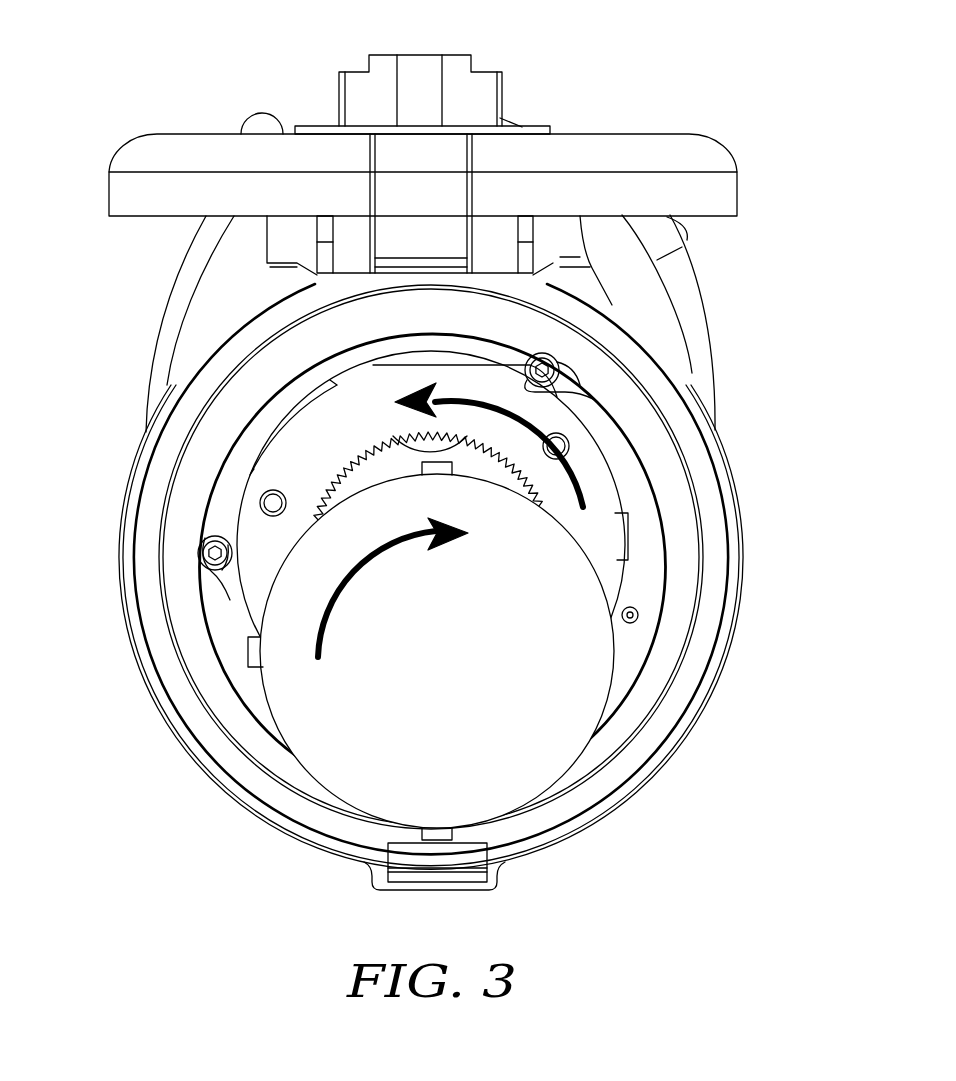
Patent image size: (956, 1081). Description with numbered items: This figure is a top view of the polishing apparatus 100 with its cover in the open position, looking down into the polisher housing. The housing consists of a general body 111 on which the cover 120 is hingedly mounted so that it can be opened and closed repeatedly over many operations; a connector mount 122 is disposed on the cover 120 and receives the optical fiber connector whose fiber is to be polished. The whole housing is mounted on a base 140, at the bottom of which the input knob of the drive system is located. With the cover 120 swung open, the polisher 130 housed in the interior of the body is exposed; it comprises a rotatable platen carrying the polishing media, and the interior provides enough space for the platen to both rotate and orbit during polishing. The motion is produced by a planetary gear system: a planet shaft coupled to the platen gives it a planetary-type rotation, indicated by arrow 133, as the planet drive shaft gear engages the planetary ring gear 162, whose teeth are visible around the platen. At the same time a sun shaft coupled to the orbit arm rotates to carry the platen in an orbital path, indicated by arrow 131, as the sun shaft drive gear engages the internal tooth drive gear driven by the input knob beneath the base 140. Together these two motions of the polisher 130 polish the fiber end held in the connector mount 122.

The polishing apparatus 100 is at (672, 826).
The general body 111 is at (707, 709).
The cover 120 is at (670, 133).
The connector mount 122 is at (485, 70).
The polisher 130 is at (343, 752).
The arrow indicating orbital motion 131 is at (575, 482).
The arrow indicating planetary rotation 133 is at (305, 605).
The base 140 is at (182, 278).
The planetary ring gear 162 is at (296, 452).